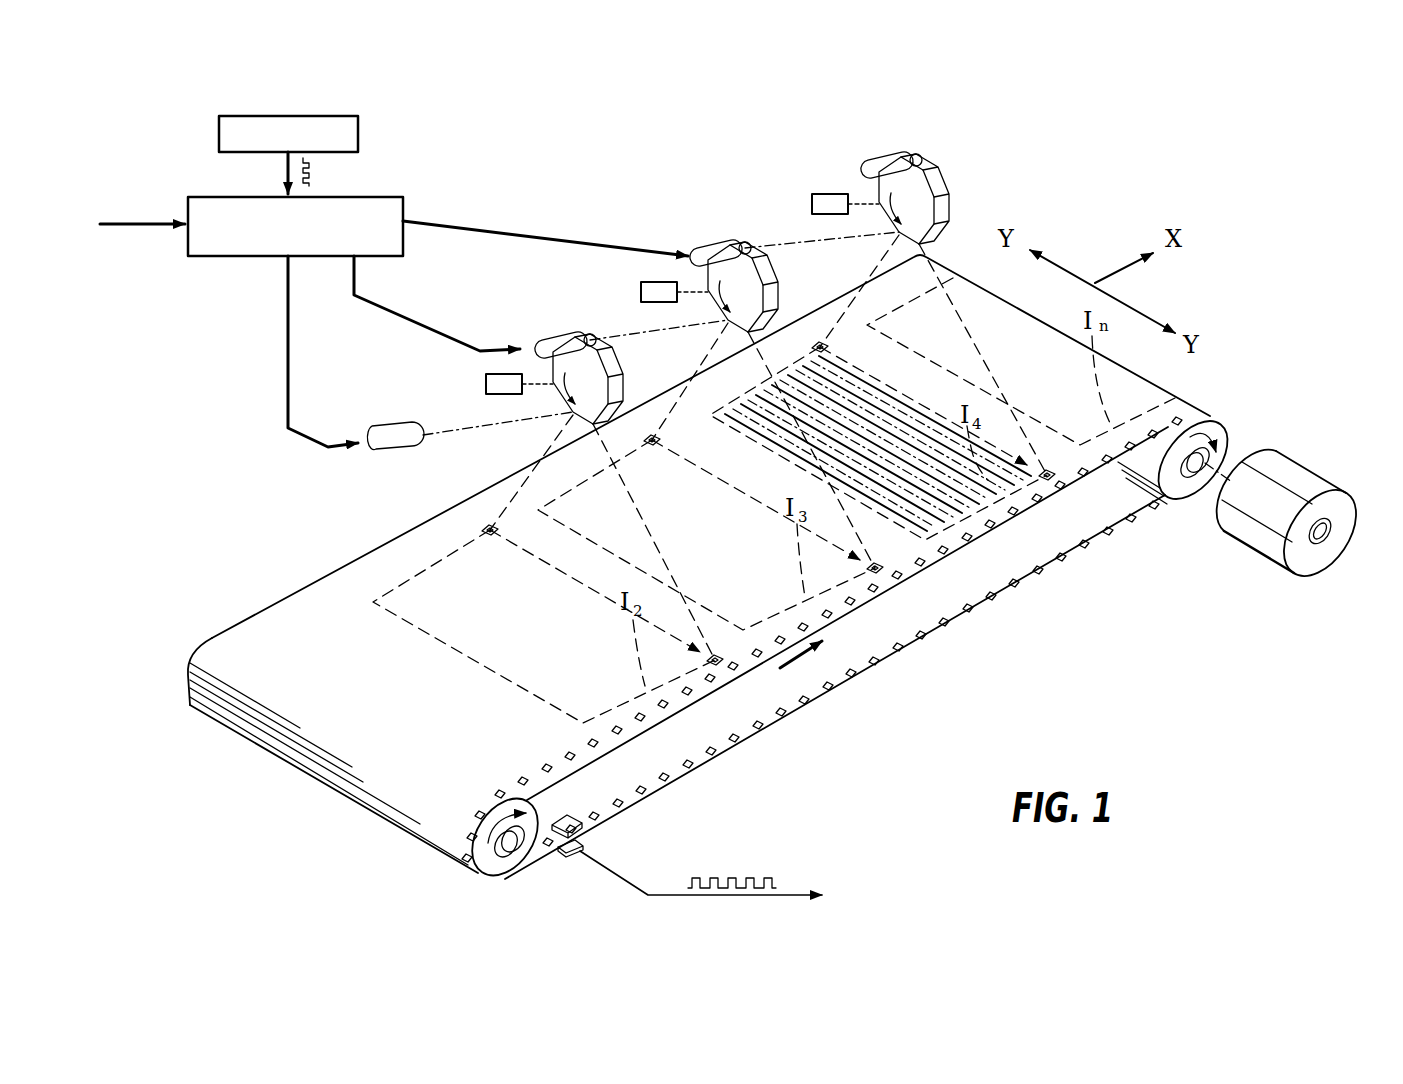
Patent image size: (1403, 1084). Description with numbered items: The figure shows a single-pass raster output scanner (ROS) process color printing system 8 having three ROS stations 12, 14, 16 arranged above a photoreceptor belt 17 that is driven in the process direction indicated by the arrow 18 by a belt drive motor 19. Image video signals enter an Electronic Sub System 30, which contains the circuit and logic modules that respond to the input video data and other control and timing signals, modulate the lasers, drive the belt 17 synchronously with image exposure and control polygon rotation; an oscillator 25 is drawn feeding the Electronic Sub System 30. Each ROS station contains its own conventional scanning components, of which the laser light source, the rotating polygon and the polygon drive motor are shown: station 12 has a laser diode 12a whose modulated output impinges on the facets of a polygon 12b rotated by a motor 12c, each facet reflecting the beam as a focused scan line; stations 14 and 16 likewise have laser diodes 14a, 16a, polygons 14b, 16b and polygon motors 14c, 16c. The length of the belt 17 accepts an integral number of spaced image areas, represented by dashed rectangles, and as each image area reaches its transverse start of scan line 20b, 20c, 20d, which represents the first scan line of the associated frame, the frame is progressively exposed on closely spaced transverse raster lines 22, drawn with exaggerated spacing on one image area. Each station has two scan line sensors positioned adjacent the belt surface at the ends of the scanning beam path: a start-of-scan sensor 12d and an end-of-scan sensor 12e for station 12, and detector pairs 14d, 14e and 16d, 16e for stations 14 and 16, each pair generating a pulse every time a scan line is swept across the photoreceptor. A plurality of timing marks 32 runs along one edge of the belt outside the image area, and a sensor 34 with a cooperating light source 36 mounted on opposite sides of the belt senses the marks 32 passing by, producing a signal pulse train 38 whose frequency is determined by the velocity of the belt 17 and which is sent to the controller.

The ROS process color printing system 8 is at (150, 182).
The oscillator 25 is at (358, 132).
The Electronic Sub System (ESS) 30 is at (395, 211).
The ROS station 12 is at (854, 305).
The laser diode 12a is at (735, 242).
The polygon 12b is at (903, 162).
The motor 12c is at (830, 213).
The start-of-scan (SOS) sensor 12d is at (818, 340).
The end-of-scan (EOS) sensor 12e is at (1055, 482).
The ROS station 14 is at (698, 395).
The laser diode 14a is at (563, 330).
The polygon 14b is at (712, 240).
The polygon motor 14c is at (665, 304).
The start-of-scan sensor 14d is at (650, 430).
The end-of-scan sensor 14e is at (900, 575).
The ROS station 16 is at (532, 482).
The laser diode 16a is at (406, 425).
The polygon 16b is at (568, 333).
The polygon motor 16c is at (500, 397).
The start-of-scan sensor 16d is at (490, 522).
The end-of-scan sensor 16e is at (723, 665).
The photoreceptor belt 17 is at (268, 615).
The arrow indicating process direction 18 is at (970, 548).
The belt drive motor 19 is at (1257, 527).
The start of scan line 20b is at (752, 437).
The start of scan line 20c is at (592, 540).
The start of scan line 20d is at (453, 650).
The transverse raster lines 22 is at (890, 497).
The timing marks 32 is at (1108, 456).
The sensor 34 is at (573, 856).
The light source 36 is at (565, 815).
The signal pulse train 38 is at (735, 877).